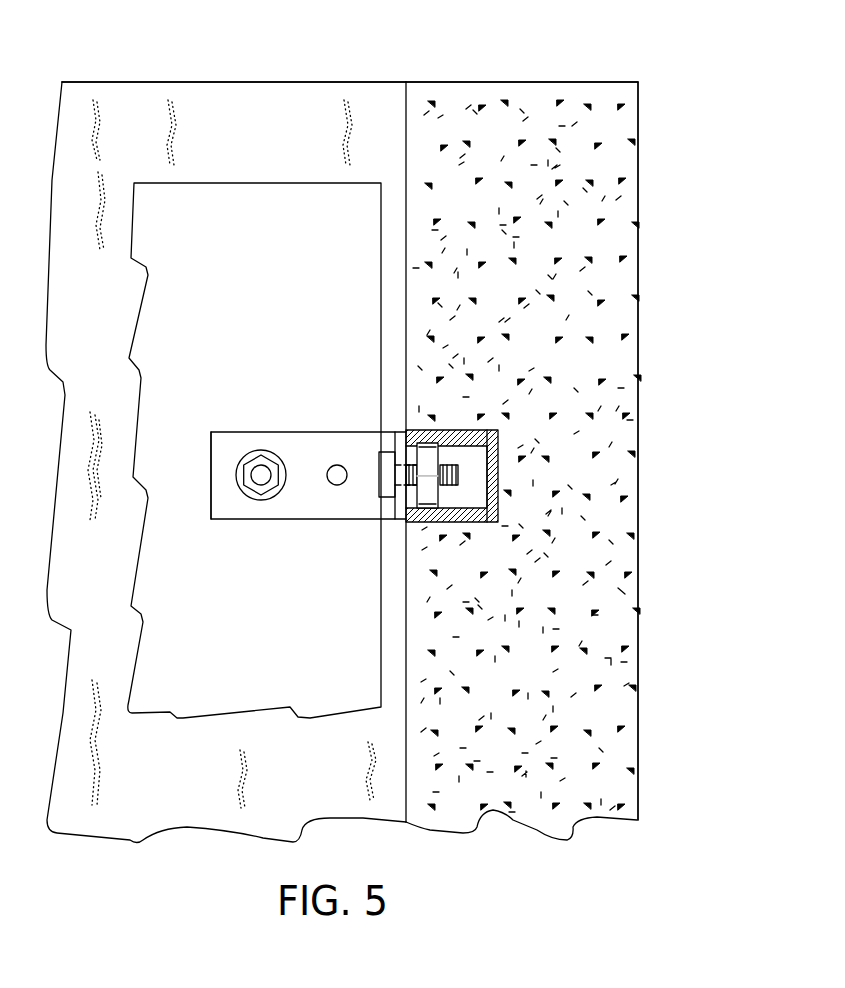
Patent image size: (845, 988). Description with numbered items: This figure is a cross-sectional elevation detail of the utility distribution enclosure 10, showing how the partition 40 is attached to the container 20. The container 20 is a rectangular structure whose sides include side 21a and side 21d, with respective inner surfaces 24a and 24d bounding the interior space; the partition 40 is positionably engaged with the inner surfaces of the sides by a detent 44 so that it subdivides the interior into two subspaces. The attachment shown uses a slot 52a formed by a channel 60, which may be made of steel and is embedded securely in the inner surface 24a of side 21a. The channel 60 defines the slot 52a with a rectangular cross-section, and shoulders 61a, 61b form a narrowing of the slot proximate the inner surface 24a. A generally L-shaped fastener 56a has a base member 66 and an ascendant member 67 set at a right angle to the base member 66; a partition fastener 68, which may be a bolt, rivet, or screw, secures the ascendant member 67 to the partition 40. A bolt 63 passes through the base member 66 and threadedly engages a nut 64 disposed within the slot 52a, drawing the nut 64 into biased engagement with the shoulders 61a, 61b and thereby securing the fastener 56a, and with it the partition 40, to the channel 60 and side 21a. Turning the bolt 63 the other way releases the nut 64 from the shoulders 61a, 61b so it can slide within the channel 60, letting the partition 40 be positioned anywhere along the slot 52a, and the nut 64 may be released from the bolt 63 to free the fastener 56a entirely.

The utility distribution enclosure 10 is at (740, 146).
The container 20 is at (638, 200).
The side 21a is at (638, 277).
The side 21d is at (117, 82).
The inner surface 24a is at (404, 113).
The inner surface 24d is at (210, 100).
The partition 40 is at (255, 192).
The detent 44 is at (673, 590).
The slot 52a is at (483, 455).
The fastener 56a is at (285, 433).
The channel 60 is at (498, 514).
The shoulder 61a is at (448, 440).
The shoulder 61b is at (443, 504).
The bolt 63 is at (381, 492).
The nut 64 is at (421, 490).
The base member 66 is at (400, 447).
The ascendant member 67 is at (235, 445).
The partition fastener 68 is at (261, 492).